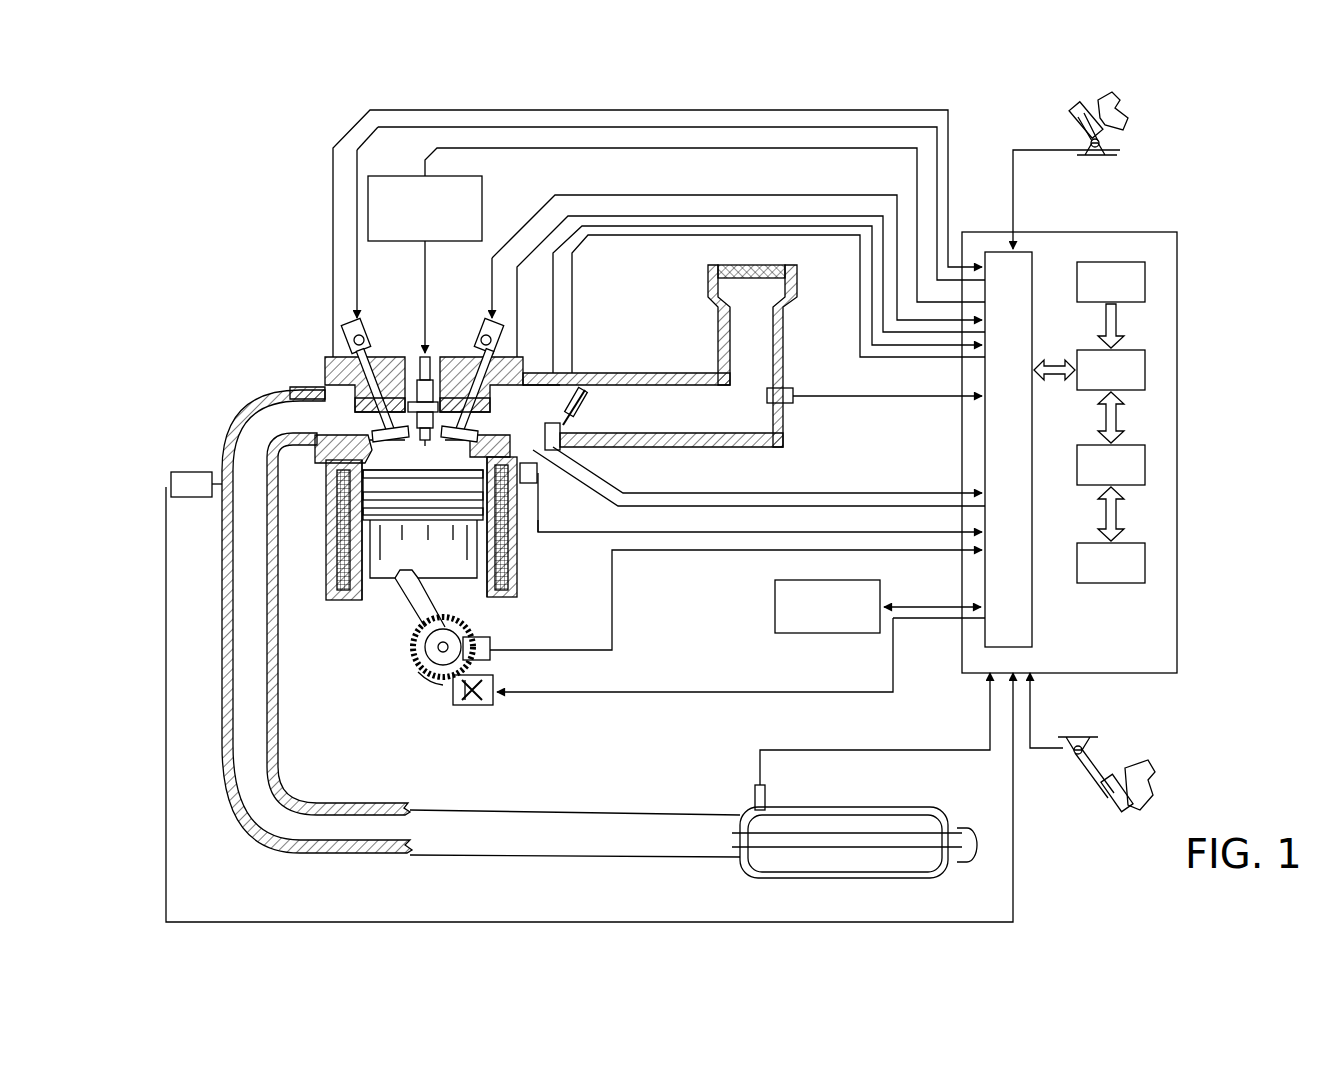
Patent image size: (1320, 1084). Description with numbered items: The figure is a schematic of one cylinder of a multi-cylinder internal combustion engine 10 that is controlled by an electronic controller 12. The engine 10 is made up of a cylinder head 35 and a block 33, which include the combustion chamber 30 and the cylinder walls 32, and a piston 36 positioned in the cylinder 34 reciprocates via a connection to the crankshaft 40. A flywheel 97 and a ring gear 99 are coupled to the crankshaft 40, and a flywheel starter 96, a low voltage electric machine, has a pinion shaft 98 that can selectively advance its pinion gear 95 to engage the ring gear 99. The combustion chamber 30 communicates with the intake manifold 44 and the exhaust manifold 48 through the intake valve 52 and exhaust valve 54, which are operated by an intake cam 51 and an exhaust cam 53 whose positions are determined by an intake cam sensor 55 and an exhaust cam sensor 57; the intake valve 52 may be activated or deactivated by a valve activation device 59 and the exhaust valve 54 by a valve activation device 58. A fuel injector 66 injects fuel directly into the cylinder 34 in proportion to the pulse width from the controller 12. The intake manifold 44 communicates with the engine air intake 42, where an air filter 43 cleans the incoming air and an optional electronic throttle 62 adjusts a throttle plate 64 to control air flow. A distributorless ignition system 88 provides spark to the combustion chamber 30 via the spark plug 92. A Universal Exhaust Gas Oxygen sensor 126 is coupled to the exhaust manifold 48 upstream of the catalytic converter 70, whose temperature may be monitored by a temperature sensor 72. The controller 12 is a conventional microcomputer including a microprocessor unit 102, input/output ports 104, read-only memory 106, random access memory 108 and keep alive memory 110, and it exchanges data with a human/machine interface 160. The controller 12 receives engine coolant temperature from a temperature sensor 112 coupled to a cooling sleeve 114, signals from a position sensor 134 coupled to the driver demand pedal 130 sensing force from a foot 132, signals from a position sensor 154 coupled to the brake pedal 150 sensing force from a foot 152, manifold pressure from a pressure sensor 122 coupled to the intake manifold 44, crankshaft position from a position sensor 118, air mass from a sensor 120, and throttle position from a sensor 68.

The internal combustion engine 10 is at (268, 306).
The electronic controller 12 is at (1180, 232).
The combustion chamber 30 is at (422, 452).
The cylinder walls 32 is at (366, 605).
The block 33 is at (323, 493).
The cylinder 34 is at (397, 590).
The cylinder head 35 is at (322, 354).
The piston 36 is at (407, 550).
The crankshaft 40 is at (427, 678).
The engine air intake 42 is at (700, 285).
The air filter 43 is at (762, 282).
The intake manifold 44 is at (552, 420).
The exhaust manifold 48 is at (310, 429).
The intake cam 51 is at (478, 337).
The intake valve 52 is at (463, 415).
The exhaust cam 53 is at (363, 333).
The exhaust valve 54 is at (350, 410).
The intake cam sensor 55 is at (500, 344).
The exhaust cam sensor 57 is at (345, 348).
The valve activation device 58 is at (373, 346).
The valve activation device 59 is at (480, 352).
The electronic throttle 62 is at (580, 412).
The throttle plate 64 is at (574, 424).
The fuel injector 66 is at (537, 484).
The throttle position sensor 68 is at (557, 393).
The catalytic converter 70 is at (780, 808).
The temperature sensor 72 is at (766, 790).
The distributorless ignition system 88 is at (383, 176).
The spark plug 92 is at (431, 362).
The pinion gear 95 is at (478, 706).
The flywheel starter 96 is at (486, 706).
The flywheel 97 is at (420, 650).
The pinion shaft 98 is at (462, 705).
The ring gear 99 is at (441, 688).
The microprocessor unit 102 is at (1145, 372).
The input/output ports 104 is at (1035, 262).
The read-only memory 106 is at (1145, 282).
The random access memory 108 is at (1145, 470).
The keep alive memory 110 is at (1145, 568).
The temperature sensor 112 is at (557, 519).
The cooling sleeve 114 is at (517, 553).
The position sensor 118 is at (490, 640).
The air mass sensor 120 is at (790, 388).
The pressure sensor 122 is at (565, 447).
The Universal Exhaust Gas Oxygen sensor 126 is at (171, 478).
The driver demand pedal 130 is at (1075, 126).
The foot 132 is at (1122, 115).
The position sensor 134 is at (1120, 150).
The brake pedal 150 is at (1102, 800).
The foot 152 is at (1125, 765).
The position sensor 154 is at (1067, 746).
The human/machine interface 160 is at (827, 606).